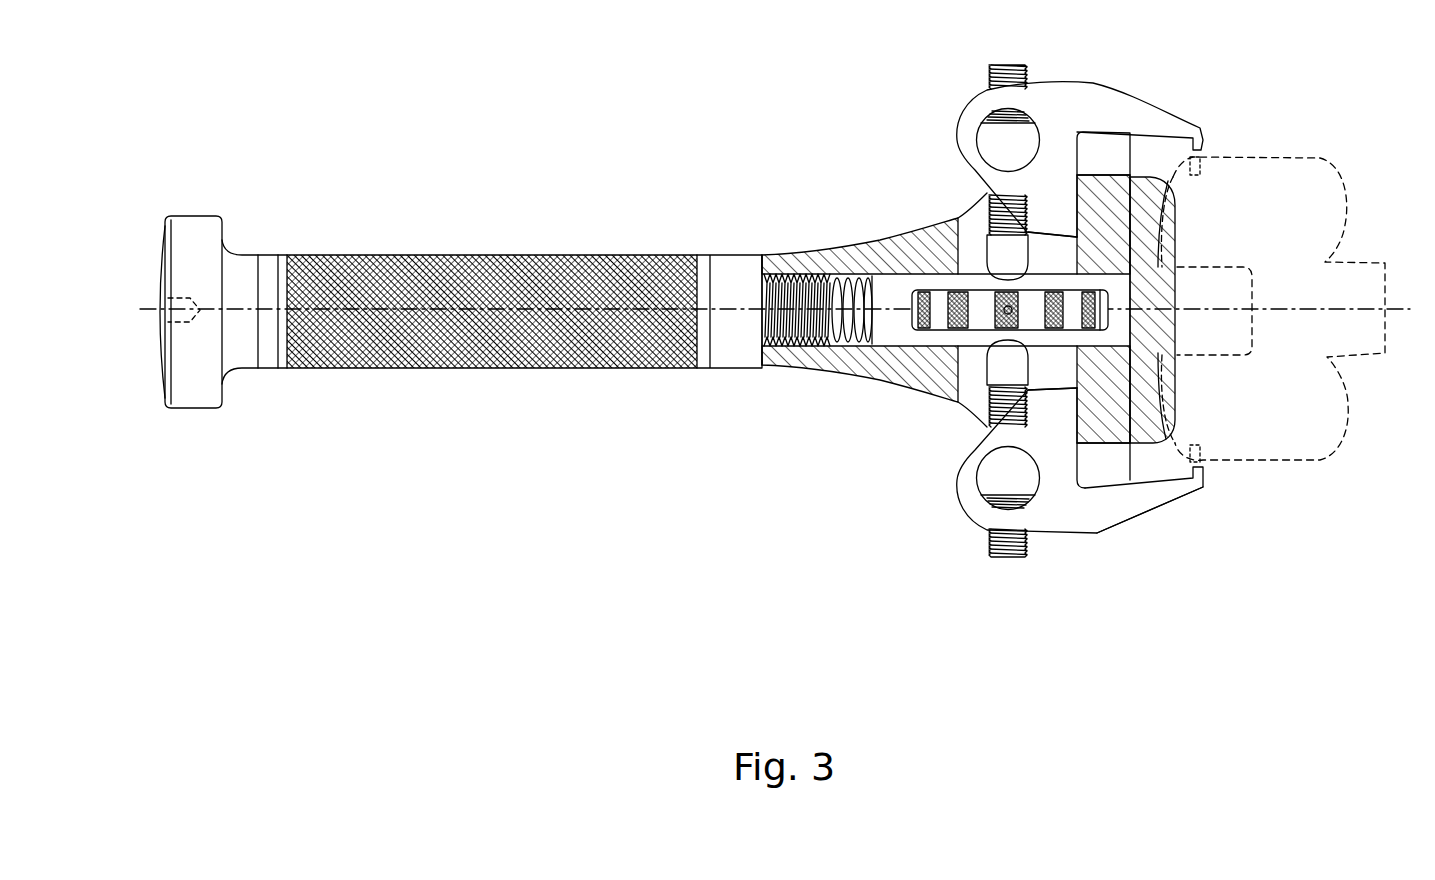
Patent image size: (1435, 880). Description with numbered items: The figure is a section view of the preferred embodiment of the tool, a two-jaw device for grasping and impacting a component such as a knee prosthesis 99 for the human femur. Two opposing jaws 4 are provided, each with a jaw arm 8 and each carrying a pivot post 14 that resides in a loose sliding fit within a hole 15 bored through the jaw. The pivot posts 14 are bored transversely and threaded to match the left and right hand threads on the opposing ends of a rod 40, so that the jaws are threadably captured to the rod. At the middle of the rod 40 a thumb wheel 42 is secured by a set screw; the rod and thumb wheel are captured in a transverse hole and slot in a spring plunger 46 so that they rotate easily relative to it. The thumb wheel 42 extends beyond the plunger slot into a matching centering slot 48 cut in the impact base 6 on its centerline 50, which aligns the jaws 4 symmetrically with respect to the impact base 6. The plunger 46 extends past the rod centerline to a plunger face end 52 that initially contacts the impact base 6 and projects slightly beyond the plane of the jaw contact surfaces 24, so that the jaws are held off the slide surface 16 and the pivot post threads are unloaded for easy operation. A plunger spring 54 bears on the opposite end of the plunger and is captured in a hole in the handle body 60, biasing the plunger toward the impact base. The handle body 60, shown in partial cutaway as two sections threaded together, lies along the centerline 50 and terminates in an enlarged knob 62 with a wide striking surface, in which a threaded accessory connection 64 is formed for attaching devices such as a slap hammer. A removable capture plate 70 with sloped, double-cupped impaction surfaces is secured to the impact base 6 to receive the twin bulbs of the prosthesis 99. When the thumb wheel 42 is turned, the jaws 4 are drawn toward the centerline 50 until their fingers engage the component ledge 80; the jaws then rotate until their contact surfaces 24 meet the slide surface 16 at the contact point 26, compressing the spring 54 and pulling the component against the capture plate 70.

The jaw 4 is at (972, 120).
The impact base 6 is at (1100, 176).
The jaw arm 8 is at (1165, 512).
The pivot post 14 is at (978, 141).
The pivot post hole 15 is at (1031, 121).
The slide surface 16 is at (1078, 216).
The jaw contact surface 24 is at (1082, 423).
The contact point 26 is at (1077, 237).
The rod 40 is at (1008, 558).
The thumb wheel 42 is at (920, 332).
The spring plunger 46 is at (886, 249).
The centering slot 48 is at (1170, 296).
The centerline 50 is at (1393, 308).
The plunger face end 52 is at (1077, 356).
The plunger spring 54 is at (851, 346).
The handle body 60 is at (567, 255).
The knob 62 is at (200, 412).
The threaded accessory connection 64 is at (160, 310).
The capture plate 70 is at (1146, 180).
The component ledge 80 is at (1196, 456).
The knee prosthesis 99 is at (1320, 160).